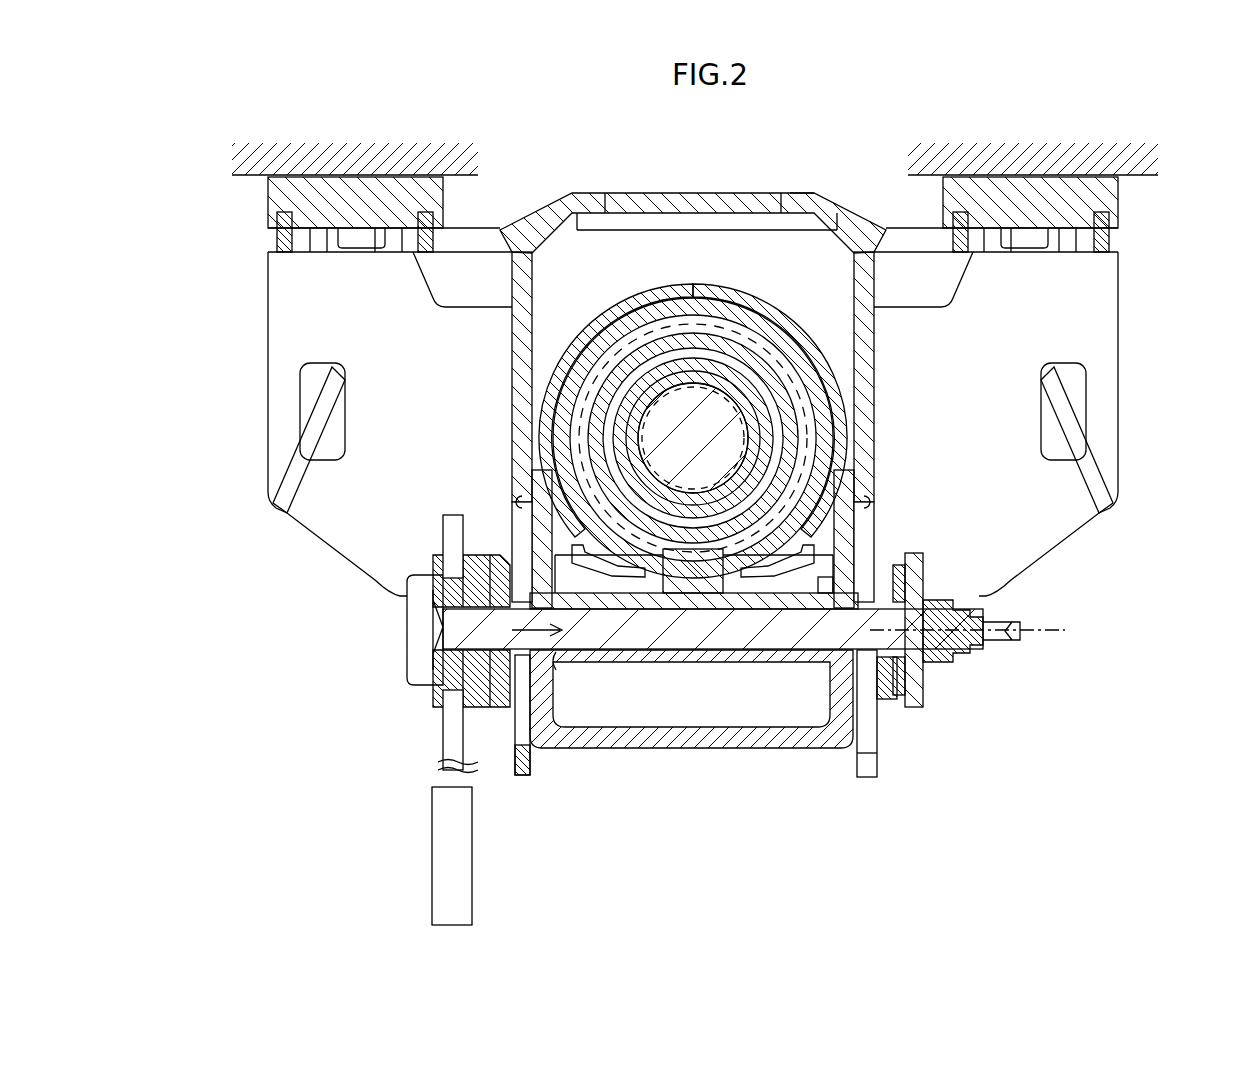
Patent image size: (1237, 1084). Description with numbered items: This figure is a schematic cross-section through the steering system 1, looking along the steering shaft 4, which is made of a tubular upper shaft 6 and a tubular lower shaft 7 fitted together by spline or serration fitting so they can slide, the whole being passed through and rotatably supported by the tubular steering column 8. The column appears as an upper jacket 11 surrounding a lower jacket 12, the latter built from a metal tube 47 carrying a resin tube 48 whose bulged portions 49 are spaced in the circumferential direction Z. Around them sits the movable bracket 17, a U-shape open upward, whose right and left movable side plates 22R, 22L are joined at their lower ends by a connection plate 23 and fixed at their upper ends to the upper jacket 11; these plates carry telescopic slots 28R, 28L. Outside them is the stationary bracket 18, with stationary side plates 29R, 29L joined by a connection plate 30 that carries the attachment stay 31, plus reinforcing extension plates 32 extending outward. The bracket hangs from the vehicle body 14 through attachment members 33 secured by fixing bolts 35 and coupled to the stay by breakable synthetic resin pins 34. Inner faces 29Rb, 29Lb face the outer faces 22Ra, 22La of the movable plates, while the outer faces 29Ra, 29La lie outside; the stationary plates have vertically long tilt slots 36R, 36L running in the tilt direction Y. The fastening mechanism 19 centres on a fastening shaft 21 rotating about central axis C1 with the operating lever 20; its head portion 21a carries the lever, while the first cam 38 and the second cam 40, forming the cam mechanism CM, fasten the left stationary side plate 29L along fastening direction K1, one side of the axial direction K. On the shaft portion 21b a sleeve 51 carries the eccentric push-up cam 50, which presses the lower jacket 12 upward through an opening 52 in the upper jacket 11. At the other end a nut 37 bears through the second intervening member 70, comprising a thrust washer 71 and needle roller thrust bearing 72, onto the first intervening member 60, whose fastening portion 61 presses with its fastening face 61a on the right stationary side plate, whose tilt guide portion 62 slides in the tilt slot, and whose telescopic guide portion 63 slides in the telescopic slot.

The steering system 1 is at (1178, 281).
The steering shaft 4 is at (716, 365).
The upper shaft 6 is at (732, 375).
The lower shaft 7 is at (730, 395).
The steering column 8 is at (697, 304).
The upper jacket 11 is at (578, 392).
The lower jacket 12 is at (677, 280).
The vehicle body 14 is at (338, 150).
The movable bracket 17 is at (858, 472).
The stationary bracket 18 is at (880, 332).
The fastening mechanism 19 is at (399, 698).
The operating lever 20 is at (450, 858).
The fastening shaft 21 is at (404, 634).
The head portion 21a is at (415, 665).
The shaft portion 21b is at (640, 650).
The left movable side plate 22L is at (540, 456).
The outer face of left movable side plate 22La is at (535, 488).
The right movable side plate 22R is at (855, 446).
The outer face of right movable side plate 22Ra is at (855, 484).
The connection plate 23 is at (612, 750).
The left telescopic slot 28L is at (548, 735).
The right telescopic slot 28R is at (820, 735).
The left stationary side plate 29L is at (513, 373).
The outer face of left stationary side plate 29La is at (513, 340).
The inner face of left stationary side plate 29Lb is at (529, 414).
The right stationary side plate 29R is at (866, 380).
The outer face of right stationary side plate 29Ra is at (876, 357).
The inner face of right stationary side plate 29Rb is at (876, 402).
The connection plate 30 is at (690, 207).
The attachment stay 31 is at (836, 205).
The reinforcing extension plates 32 is at (285, 319).
The attachment members 33 is at (275, 196).
The synthetic resin pins 34 is at (283, 238).
The fixing bolt 35 is at (355, 250).
The left tilt slot 36L is at (525, 532).
The right tilt slot 36R is at (866, 512).
The nut 37 is at (945, 660).
The first cam 38 is at (470, 702).
The second cam 40 is at (498, 722).
The metal tube 47 is at (616, 355).
The resin tube 48 is at (652, 345).
The bulged portions 49 is at (578, 382).
The push-up cam 50 is at (683, 600).
The sleeve 51 is at (742, 680).
The opening 52 is at (623, 585).
The first intervening member 60 is at (893, 705).
The fastening portion 61 is at (900, 712).
The fastening face 61a is at (866, 770).
The tilt guide portion 62 is at (828, 590).
The telescopic guide portion 63 is at (822, 583).
The second intervening member 70 is at (1093, 560).
The thrust washer 71 is at (917, 575).
The needle roller thrust bearing 72 is at (905, 598).
The central axis C1 is at (1040, 648).
The cam mechanism CM is at (373, 712).
The axial direction K is at (1078, 630).
The fastening direction K1 is at (505, 722).
The tilt direction Y is at (695, 815).
The circumferential direction Z is at (838, 367).